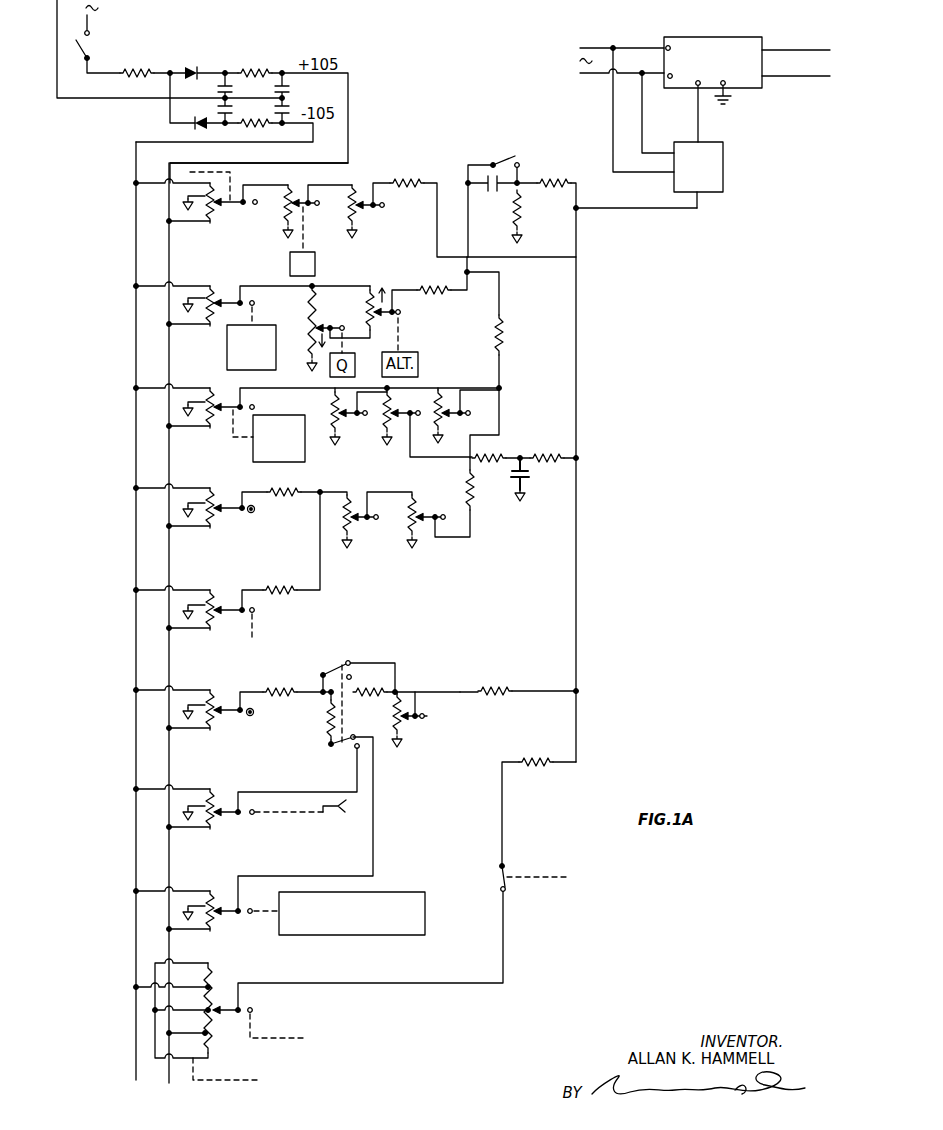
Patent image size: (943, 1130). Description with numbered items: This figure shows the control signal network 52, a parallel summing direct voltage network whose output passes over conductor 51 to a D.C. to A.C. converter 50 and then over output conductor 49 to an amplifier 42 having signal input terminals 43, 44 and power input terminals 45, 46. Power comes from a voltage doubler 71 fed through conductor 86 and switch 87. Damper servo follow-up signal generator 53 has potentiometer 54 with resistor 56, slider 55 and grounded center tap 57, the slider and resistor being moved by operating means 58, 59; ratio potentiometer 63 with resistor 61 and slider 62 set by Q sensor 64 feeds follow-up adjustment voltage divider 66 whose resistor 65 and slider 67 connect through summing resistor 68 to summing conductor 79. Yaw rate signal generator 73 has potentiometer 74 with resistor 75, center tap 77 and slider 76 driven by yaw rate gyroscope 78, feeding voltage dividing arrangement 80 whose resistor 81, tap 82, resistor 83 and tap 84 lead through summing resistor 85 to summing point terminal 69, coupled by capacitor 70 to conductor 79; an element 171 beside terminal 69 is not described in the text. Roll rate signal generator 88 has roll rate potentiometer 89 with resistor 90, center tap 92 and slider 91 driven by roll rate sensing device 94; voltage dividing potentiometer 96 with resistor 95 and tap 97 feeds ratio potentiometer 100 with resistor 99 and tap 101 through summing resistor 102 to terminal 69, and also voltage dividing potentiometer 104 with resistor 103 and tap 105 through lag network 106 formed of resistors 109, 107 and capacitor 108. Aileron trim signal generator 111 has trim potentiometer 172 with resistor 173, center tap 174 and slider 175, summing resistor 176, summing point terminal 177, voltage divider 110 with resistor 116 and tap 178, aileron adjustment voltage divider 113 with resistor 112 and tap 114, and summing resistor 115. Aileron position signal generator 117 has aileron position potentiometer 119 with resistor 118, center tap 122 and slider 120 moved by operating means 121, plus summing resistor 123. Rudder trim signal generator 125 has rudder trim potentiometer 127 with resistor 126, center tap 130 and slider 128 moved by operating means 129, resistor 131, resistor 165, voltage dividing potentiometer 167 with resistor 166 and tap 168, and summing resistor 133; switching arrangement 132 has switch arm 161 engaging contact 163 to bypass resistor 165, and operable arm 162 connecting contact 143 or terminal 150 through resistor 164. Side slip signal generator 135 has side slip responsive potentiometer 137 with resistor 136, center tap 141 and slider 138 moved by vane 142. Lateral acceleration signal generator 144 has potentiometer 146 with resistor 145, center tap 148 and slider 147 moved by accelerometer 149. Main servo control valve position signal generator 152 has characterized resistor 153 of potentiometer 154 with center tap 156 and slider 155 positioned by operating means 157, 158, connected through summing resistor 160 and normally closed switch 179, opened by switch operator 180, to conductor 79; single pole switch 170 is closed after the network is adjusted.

The amplifier 42 is at (690, 37).
The alternating voltage signal input terminal 43 is at (695, 88).
The alternating voltage signal input terminal 44 is at (729, 90).
The alternating voltage power input terminal 45 is at (668, 80).
The alternating voltage power input terminal 46 is at (665, 47).
The output conductor 49 is at (696, 132).
The D.C. to A.C. converter 50 is at (724, 172).
The conductor 51 is at (700, 206).
The control signal network 52 is at (611, 275).
The damper servo follow-up signal generator 53 is at (143, 240).
The potentiometer 54 is at (221, 214).
The slider 55 is at (246, 206).
The resistor 56 is at (212, 220).
The center tap 57 is at (182, 197).
The operating means 58 is at (247, 180).
The operating means 59 is at (215, 166).
The resistor 61 is at (280, 219).
The slider 62 is at (305, 205).
The ratio potentiometer 63 is at (300, 195).
The Q sensor 64 is at (319, 242).
The resistor 65 is at (299, 219).
The follow up adjustment potentiometer voltage divider 66 is at (360, 186).
The slider 67 is at (375, 210).
The summing resistor 68 is at (399, 190).
The summing point terminal 69 is at (466, 200).
The capacitor 70 is at (492, 193).
The voltage doubler 71 is at (241, 100).
The yaw rate signal generator 73 is at (143, 349).
The potentiometer 74 is at (229, 290).
The resistor 75 is at (207, 285).
The slider 76 is at (234, 313).
The center tap 77 is at (204, 316).
The yaw rate gyroscope 78 is at (232, 346).
The summing conductor 79 is at (578, 235).
The voltage dividing arrangement 80 is at (379, 335).
The resistor 81 is at (316, 301).
The adjustable tap 82 is at (333, 326).
The resistor 83 is at (369, 309).
The adjustable tap 84 is at (399, 313).
The summing resistor 85 is at (435, 293).
The conductor 86 is at (91, 68).
The single pole single throw switch 87 is at (91, 43).
The roll rate signal generator 88 is at (143, 444).
The roll rate potentiometer 89 is at (229, 392).
The resistor 90 is at (207, 389).
The slider 91 is at (223, 430).
The center tap 92 is at (198, 432).
The roll rate sensing device 94 is at (284, 415).
The resistor 95 is at (336, 411).
The voltage dividing potentiometer 96 is at (349, 393).
The adjustable tap 97 is at (363, 420).
The resistor 99 is at (416, 420).
The ratio potentiometer 100 is at (447, 393).
The adjustable tap 101 is at (464, 418).
The summing resistor 102 is at (506, 330).
The resistor 103 is at (373, 399).
The voltage dividing potentiometer 104 is at (397, 450).
The adjustable tap 105 is at (401, 417).
The lag network 106 is at (525, 427).
The resistor 107 is at (544, 458).
The capacitor 108 is at (510, 478).
The resistor 109 is at (501, 457).
The voltage divider 110 is at (356, 497).
The aileron trim signal generator 111 is at (141, 523).
The resistor 112 is at (406, 511).
The aileron adjustment voltage divider 113 is at (418, 512).
The adjustable tap 114 is at (436, 538).
The summing resistor 115 is at (475, 500).
The resistor 116 is at (357, 531).
The aileron position signal generator 117 is at (141, 624).
The resistor 118 is at (206, 592).
The aileron position potentiometer 119 is at (229, 592).
The adjustable slider 120 is at (240, 616).
The operating means 121 is at (256, 631).
The center tap 122 is at (205, 629).
The summing resistor 123 is at (277, 587).
The rudder trim signal generator 125 is at (141, 739).
The resistor 126 is at (206, 692).
The rudder trim potentiometer 127 is at (229, 694).
The slider 128 is at (238, 716).
The operating means 129 is at (256, 716).
The center tap 130 is at (205, 729).
The resistor 131 is at (280, 689).
The switching arrangement 132 is at (346, 654).
The summing resistor 133 is at (483, 690).
The side slip signal generator 135 is at (141, 825).
The resistor 136 is at (206, 791).
The side slip responsive potentiometer 137 is at (229, 796).
The slider 138 is at (240, 815).
The center tap 141 is at (205, 829).
The vane 142 is at (331, 810).
The contact 143 is at (355, 752).
The lateral acceleration signal generator 144 is at (141, 937).
The resistor 145 is at (207, 893).
The lateral accelerometer responsive potentiometer 146 is at (222, 890).
The adjustable slider 147 is at (240, 914).
The center tap 148 is at (205, 931).
The accelerometer 149 is at (308, 935).
The terminal 150 is at (360, 735).
The main servo control valve position signal generator 152 is at (98, 1015).
The characterized resistor 153 is at (206, 984).
The potentiometer 154 is at (229, 987).
The adjustable slider 155 is at (238, 1022).
The center tap 156 is at (204, 1009).
The operating means 157 is at (283, 1039).
The operating means 158 is at (240, 1079).
The summing resistor 160 is at (526, 760).
The switch arm 161 is at (331, 673).
The operable arm 162 is at (330, 747).
The switch contact 163 is at (346, 662).
The resistor 164 is at (328, 718).
The resistor 165 is at (362, 689).
The resistor 166 is at (410, 731).
The voltage dividing potentiometer 167 is at (405, 691).
The adjustable tap 168 is at (420, 720).
The single pole switch 170 is at (500, 156).
The resistor 171 is at (520, 207).
The trim potentiometer 172 is at (223, 496).
The resistor 173 is at (206, 500).
The center tap 174 is at (205, 530).
The adjustable slider 175 is at (248, 513).
The summing resistor 176 is at (275, 491).
The summing point terminal 177 is at (322, 491).
The adjustable tap 178 is at (360, 520).
The normally closed single throw switch 179 is at (491, 880).
The switch operator 180 is at (549, 879).